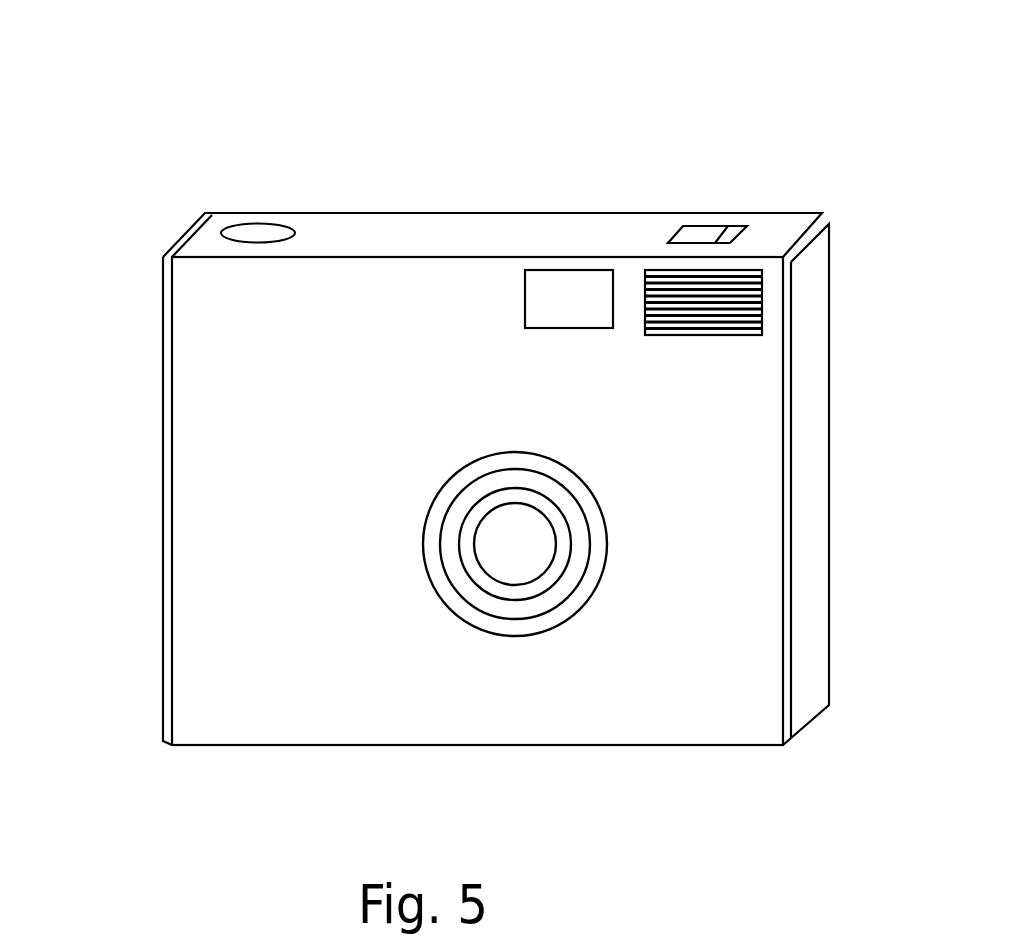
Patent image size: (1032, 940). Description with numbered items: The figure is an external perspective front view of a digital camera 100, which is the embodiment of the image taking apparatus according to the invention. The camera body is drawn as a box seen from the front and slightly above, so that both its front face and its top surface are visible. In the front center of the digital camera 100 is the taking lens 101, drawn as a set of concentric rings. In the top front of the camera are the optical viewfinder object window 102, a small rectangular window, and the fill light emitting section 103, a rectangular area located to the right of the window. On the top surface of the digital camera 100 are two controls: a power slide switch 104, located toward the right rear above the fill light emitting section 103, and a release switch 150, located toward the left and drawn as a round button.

The digital camera 100 is at (122, 129).
The taking lens 101 is at (515, 543).
The optical viewfinder object window 102 is at (560, 292).
The fill light emitting section 103 is at (666, 290).
The power slide switch 104 is at (697, 233).
The release switch 150 is at (252, 235).